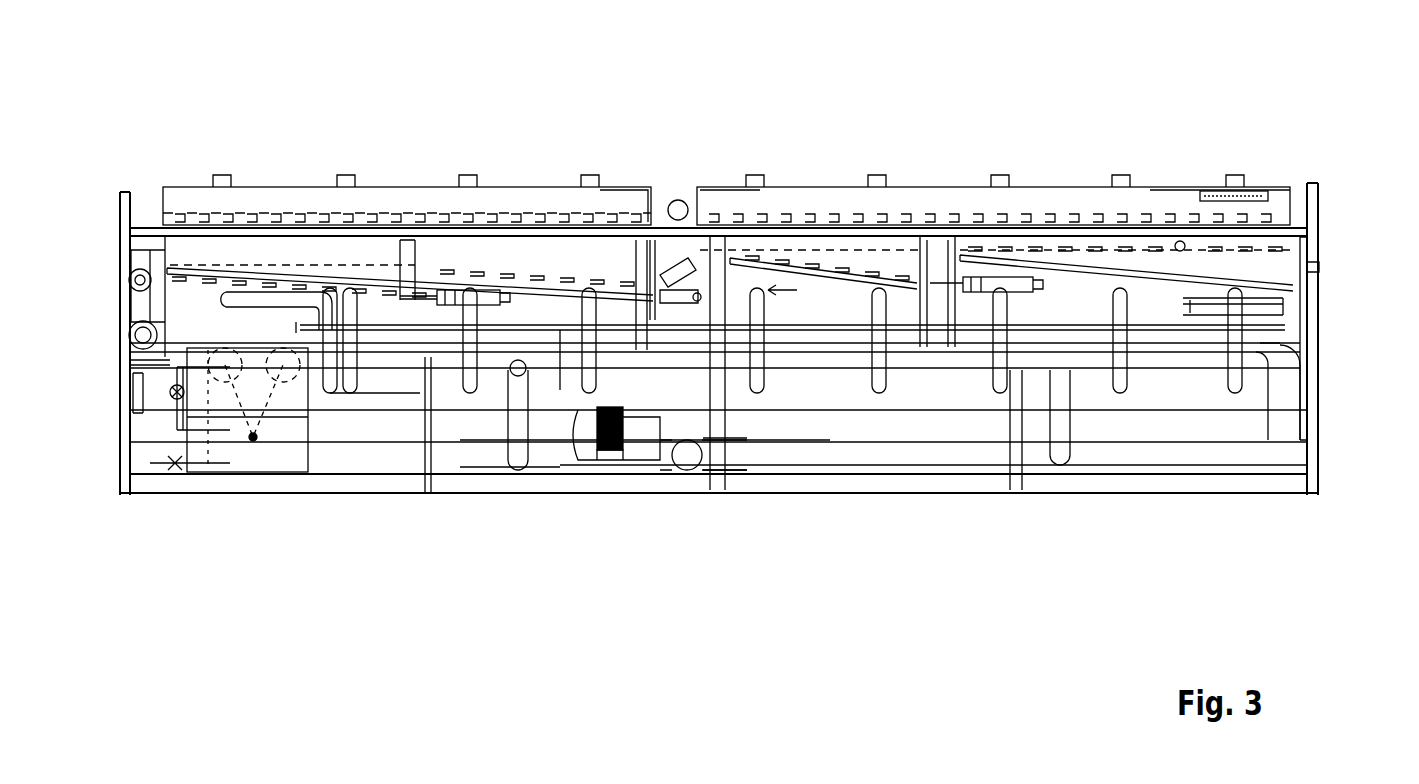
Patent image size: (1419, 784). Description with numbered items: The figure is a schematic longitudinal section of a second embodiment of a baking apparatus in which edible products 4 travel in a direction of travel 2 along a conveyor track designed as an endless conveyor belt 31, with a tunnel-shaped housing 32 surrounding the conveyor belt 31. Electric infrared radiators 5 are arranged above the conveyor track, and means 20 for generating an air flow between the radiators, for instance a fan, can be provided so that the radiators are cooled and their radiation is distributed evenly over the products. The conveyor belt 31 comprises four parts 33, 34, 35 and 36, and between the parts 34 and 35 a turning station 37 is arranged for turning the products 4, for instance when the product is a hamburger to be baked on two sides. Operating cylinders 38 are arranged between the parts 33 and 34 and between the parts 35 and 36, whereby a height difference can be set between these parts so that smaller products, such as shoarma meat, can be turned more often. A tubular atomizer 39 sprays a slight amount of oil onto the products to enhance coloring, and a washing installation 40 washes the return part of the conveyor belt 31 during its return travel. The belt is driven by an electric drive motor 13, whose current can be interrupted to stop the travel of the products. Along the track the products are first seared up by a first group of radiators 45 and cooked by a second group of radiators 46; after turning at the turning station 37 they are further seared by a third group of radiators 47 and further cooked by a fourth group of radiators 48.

The direction of travel 2 is at (791, 294).
The edible products 4 is at (1263, 250).
The electric infrared radiators 5 is at (910, 225).
The electric drive motor 13 is at (131, 340).
The means for generating an air flow 20 is at (585, 465).
The endless conveyor belt 31 is at (246, 581).
The tunnel-shaped housing 32 is at (1320, 337).
The first part of the conveyor belt 33 is at (1055, 265).
The second part of the conveyor belt 34 is at (771, 280).
The third part of the conveyor belt 35 is at (515, 270).
The fourth part of the conveyor belt 36 is at (258, 270).
The turning station 37 is at (680, 250).
The operating cylinders 38 is at (482, 295).
The tubular atomizer 39 is at (1178, 240).
The washing installation 40 is at (220, 447).
The first group of radiators 45 is at (1242, 142).
The second group of radiators 46 is at (888, 134).
The third group of radiators 47 is at (636, 124).
The fourth group of radiators 48 is at (363, 122).